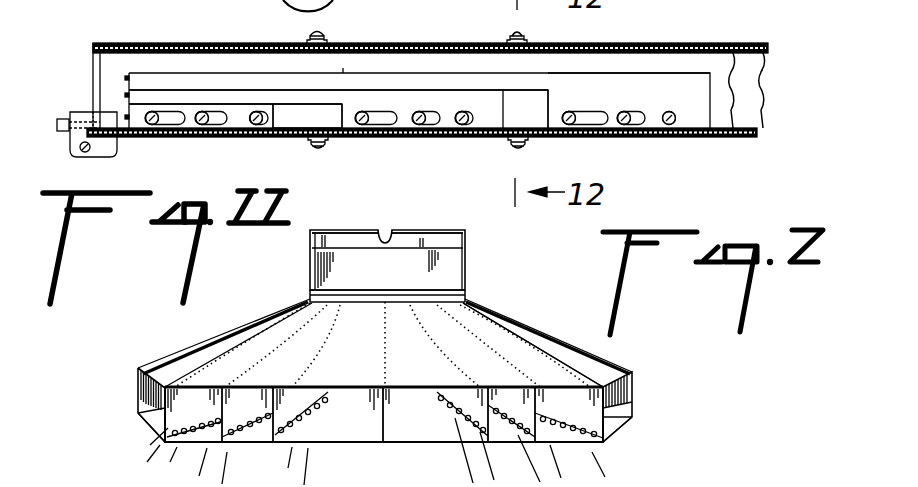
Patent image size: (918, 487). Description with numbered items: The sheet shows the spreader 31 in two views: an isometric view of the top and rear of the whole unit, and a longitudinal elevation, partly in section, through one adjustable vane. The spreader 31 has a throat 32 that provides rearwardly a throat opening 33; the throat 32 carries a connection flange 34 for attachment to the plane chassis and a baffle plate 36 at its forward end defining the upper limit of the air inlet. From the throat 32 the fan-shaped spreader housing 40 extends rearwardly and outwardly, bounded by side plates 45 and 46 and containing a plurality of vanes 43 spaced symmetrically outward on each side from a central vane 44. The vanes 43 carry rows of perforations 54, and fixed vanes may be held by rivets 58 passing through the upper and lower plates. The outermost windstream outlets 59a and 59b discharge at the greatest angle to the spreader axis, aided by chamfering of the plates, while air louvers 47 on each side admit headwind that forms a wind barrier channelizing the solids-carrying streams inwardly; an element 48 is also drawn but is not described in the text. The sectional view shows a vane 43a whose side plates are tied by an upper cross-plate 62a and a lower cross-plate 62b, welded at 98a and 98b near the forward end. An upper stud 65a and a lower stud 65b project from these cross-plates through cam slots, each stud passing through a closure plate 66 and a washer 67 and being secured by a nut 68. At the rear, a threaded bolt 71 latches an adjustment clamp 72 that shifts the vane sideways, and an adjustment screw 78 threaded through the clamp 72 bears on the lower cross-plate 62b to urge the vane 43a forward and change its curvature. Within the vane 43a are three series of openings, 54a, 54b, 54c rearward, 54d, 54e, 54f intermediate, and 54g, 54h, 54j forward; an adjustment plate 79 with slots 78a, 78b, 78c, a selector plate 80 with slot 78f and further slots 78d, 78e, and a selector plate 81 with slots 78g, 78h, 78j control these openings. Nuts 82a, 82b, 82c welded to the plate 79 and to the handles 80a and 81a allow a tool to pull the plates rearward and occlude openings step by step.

In FIG. 2, the spreader 31 is at (264, 308).
In FIG. 2, the throat 32 is at (306, 283).
In FIG. 2, the throat opening 33 is at (404, 281).
In FIG. 2, the connection flange 34 is at (355, 232).
In FIG. 2, the baffle plate 36 is at (433, 247).
In FIG. 2, the spreader housing 40 is at (497, 346).
In FIG. 2, the vanes 43 is at (366, 451).
In FIG. 11, the vane 43a is at (343, 68).
In FIG. 2, the central vane 44 is at (392, 423).
In FIG. 2, the side plate 45 is at (138, 396).
In FIG. 2, the side plate 46 is at (632, 400).
In FIG. 2, the air louvers 47 is at (197, 342).
In FIG. 2, the right hood side 48 is at (567, 339).
In FIG. 2, the perforations 54 is at (200, 425).
In FIG. 11, the vane opening 54a is at (153, 126).
In FIG. 11, the vane opening 54b is at (208, 126).
In FIG. 11, the vane opening 54c is at (262, 126).
In FIG. 11, the vane opening 54d is at (368, 126).
In FIG. 11, the vane opening 54e is at (424, 126).
In FIG. 11, the vane opening 54f is at (466, 126).
In FIG. 11, the vane opening 54g is at (574, 126).
In FIG. 11, the vane opening 54h is at (630, 126).
In FIG. 11, the vane opening 54j is at (672, 126).
In FIG. 2, the rivets 58 is at (333, 342).
In FIG. 2, the outermost windstream outlet 59a is at (157, 417).
In FIG. 2, the outermost windstream outlet 59b is at (608, 427).
In FIG. 11, the upper cross-plate 62a is at (605, 45).
In FIG. 11, the lower cross-plate 62b is at (618, 138).
In FIG. 11, the upper stud 65a is at (310, 34).
In FIG. 2, the upper stud 65a is at (141, 486).
In FIG. 11, the lower stud 65b is at (320, 152).
In FIG. 11, the closure plate 66 is at (321, 34).
In FIG. 2, the closure plate 66 is at (78, 481).
In FIG. 2, the washer 67 is at (183, 482).
In FIG. 2, the nut 68 is at (127, 486).
In FIG. 11, the threaded bolt 71 is at (84, 153).
In FIG. 11, the adjustment clamp 72 is at (70, 148).
In FIG. 11, the adjustment screw 78 is at (57, 126).
In FIG. 11, the slot 78a is at (166, 111).
In FIG. 11, the slot 78b is at (216, 111).
In FIG. 11, the slot 78c is at (262, 111).
In FIG. 11, the slot 78d is at (376, 111).
In FIG. 11, the slot 78e is at (426, 111).
In FIG. 11, the slot 78f is at (468, 111).
In FIG. 11, the slot 78g is at (590, 111).
In FIG. 11, the slot 78h is at (632, 111).
In FIG. 11, the slot 78j is at (674, 111).
In FIG. 11, the adjustment plate 79 is at (294, 125).
In FIG. 11, the selector plate 80 is at (512, 109).
In FIG. 11, the handle 80a is at (228, 97).
In FIG. 11, the selector plate 81 is at (702, 123).
In FIG. 11, the handle 81a is at (316, 83).
In FIG. 11, the nut 82a is at (125, 117).
In FIG. 11, the nut 82b is at (125, 95).
In FIG. 11, the nut 82c is at (125, 78).
In FIG. 11, the weld 98a is at (767, 70).
In FIG. 11, the weld 98b is at (745, 125).